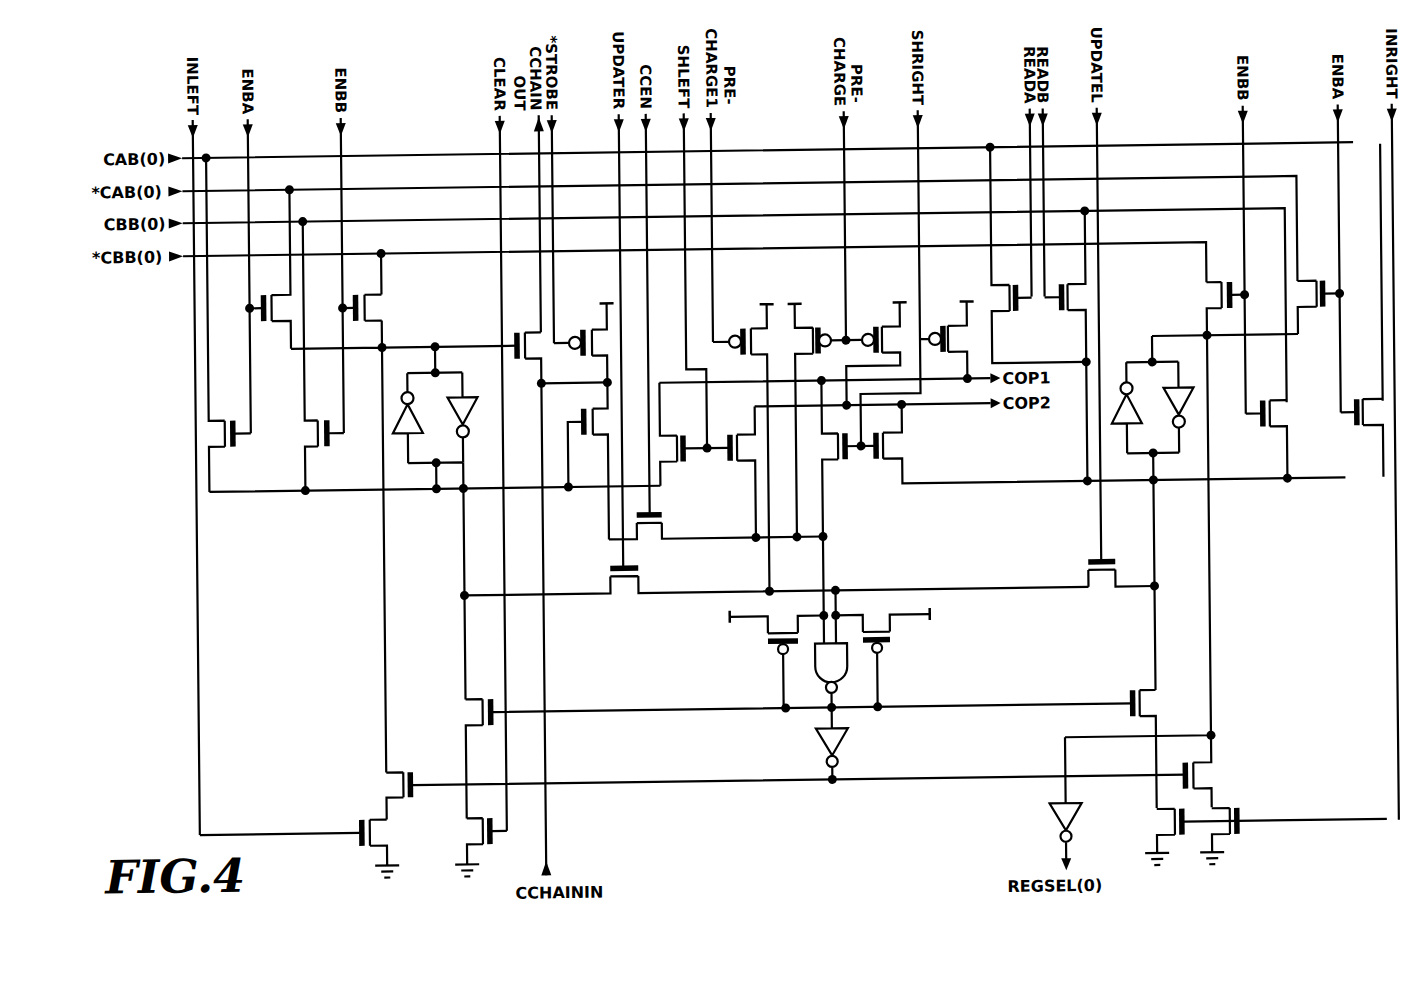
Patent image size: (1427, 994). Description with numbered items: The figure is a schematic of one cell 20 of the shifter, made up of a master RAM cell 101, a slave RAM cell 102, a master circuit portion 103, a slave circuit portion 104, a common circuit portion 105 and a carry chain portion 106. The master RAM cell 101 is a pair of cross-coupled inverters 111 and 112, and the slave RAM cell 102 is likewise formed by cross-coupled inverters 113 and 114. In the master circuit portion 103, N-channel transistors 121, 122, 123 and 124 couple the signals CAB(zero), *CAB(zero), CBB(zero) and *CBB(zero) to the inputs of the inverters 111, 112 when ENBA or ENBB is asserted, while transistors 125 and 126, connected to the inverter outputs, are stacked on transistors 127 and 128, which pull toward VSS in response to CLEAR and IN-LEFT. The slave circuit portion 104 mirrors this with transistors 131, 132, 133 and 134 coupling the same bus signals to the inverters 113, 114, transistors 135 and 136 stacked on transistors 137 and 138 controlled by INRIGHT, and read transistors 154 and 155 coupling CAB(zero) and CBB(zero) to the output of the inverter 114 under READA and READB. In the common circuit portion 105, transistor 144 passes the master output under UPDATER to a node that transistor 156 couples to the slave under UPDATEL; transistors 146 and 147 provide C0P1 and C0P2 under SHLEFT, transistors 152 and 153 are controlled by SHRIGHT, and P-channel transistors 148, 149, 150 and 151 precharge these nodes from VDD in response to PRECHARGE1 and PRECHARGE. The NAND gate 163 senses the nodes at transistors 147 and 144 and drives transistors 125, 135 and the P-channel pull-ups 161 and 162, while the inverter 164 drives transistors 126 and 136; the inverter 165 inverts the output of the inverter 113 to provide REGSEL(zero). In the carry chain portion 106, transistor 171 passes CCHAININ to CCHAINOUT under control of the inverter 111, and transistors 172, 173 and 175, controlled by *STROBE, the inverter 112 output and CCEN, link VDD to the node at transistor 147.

The cell 20 is at (148, 716).
The master RAM cell 101 is at (440, 510).
The slave RAM cell 102 is at (1182, 495).
The master circuit portion 103 is at (420, 881).
The slave circuit portion 104 is at (1130, 857).
The common circuit portion 105 is at (864, 848).
The carry chain portion 106 is at (622, 890).
The inverter 111 is at (398, 420).
The inverter 112 is at (468, 402).
The inverter 113 is at (1118, 440).
The inverter 114 is at (1182, 400).
The N-channel transistor 121 is at (224, 450).
The N-channel transistor 122 is at (272, 328).
The N-channel transistor 123 is at (316, 450).
The N-channel transistor 124 is at (368, 305).
The N-channel transistor 125 is at (468, 700).
The N-channel transistor 126 is at (398, 775).
The N-channel transistor 127 is at (468, 838).
The N-channel transistor 128 is at (368, 818).
The N-channel transistor 131 is at (1368, 448).
The N-channel transistor 132 is at (1322, 324).
The N-channel transistor 133 is at (1272, 445).
The N-channel transistor 134 is at (1208, 298).
The N-channel transistor 135 is at (1143, 700).
The N-channel transistor 136 is at (1207, 780).
The N-channel transistor 137 is at (1157, 830).
The N-channel transistor 138 is at (1228, 848).
The N-channel transistor 144 is at (608, 582).
The N-channel transistor 146 is at (670, 468).
The N-channel transistor 147 is at (752, 432).
The P-channel transistor 148 is at (752, 334).
The P-channel transistor 149 is at (820, 334).
The P-channel transistor 150 is at (876, 334).
The P-channel transistor 151 is at (945, 334).
The N-channel transistor 152 is at (836, 470).
The N-channel transistor 153 is at (905, 448).
The N-channel transistor 154 is at (1000, 324).
The N-channel transistor 155 is at (1088, 306).
The N-channel transistor 156 is at (1082, 578).
The P-channel transistor 161 is at (768, 650).
The P-channel transistor 162 is at (890, 650).
The NAND gate 163 is at (845, 675).
The inverter 164 is at (842, 745).
The inverter 165 is at (1052, 828).
The N-channel transistor 171 is at (522, 368).
The P-channel transistor 172 is at (588, 333).
The N-channel transistor 173 is at (598, 412).
The N-channel transistor 175 is at (660, 528).